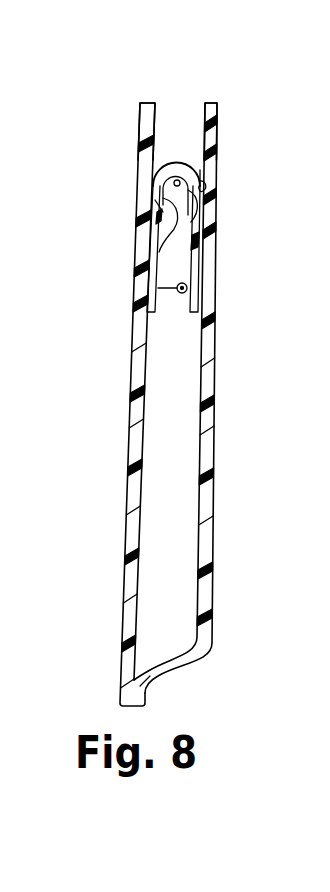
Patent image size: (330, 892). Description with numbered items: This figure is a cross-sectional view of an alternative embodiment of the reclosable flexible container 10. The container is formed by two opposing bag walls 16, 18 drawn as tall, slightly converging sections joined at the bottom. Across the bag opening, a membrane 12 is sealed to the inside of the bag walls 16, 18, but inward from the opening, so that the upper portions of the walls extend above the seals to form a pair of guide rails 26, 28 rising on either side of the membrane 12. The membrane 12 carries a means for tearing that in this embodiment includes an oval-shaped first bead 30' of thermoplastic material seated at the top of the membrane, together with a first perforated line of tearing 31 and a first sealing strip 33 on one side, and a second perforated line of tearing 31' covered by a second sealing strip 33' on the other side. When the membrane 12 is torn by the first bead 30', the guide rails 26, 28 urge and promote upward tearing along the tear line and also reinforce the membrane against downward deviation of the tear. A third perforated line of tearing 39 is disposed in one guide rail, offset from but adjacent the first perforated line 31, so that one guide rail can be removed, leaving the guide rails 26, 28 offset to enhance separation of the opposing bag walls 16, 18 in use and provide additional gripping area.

The reclosable flexible container 10 is at (112, 566).
The membrane 12 is at (173, 163).
The bag wall 16 is at (128, 470).
The bag wall 18 is at (207, 488).
The guide rail 26 is at (140, 143).
The guide rail 28 is at (213, 120).
The oval-shaped first bead 30' is at (123, 179).
The first perforated line of tearing 31 is at (233, 232).
The second perforated line of tearing 31' is at (109, 217).
The first sealing strip 33 is at (240, 151).
The second sealing strip 33' is at (116, 236).
The third perforated line of tearing 39 is at (206, 186).